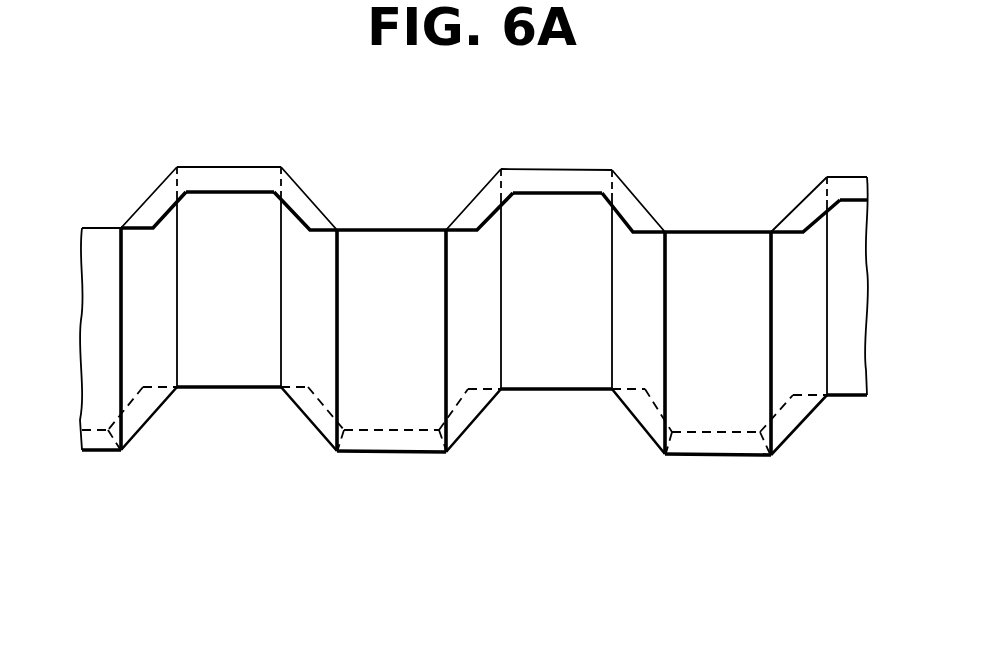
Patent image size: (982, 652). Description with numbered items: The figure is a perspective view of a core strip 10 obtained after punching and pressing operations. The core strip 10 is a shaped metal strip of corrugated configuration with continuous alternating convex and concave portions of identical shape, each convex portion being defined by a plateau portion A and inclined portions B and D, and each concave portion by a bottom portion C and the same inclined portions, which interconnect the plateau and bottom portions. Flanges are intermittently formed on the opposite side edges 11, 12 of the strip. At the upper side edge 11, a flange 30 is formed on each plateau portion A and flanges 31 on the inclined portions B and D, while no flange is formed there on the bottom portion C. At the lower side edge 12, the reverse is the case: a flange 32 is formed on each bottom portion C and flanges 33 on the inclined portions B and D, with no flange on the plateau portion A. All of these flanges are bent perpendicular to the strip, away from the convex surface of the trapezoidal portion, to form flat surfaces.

The core strip 10 is at (297, 184).
The side edge 11 is at (217, 167).
The side edge 12 is at (228, 388).
The flange 30 is at (197, 167).
The flange 31 is at (152, 202).
The flange 32 is at (392, 453).
The flange 33 is at (138, 424).